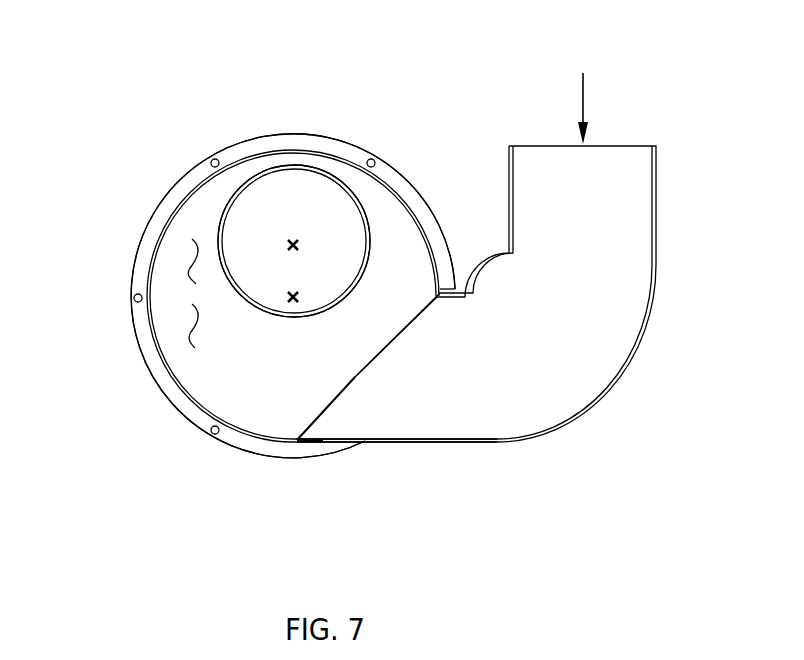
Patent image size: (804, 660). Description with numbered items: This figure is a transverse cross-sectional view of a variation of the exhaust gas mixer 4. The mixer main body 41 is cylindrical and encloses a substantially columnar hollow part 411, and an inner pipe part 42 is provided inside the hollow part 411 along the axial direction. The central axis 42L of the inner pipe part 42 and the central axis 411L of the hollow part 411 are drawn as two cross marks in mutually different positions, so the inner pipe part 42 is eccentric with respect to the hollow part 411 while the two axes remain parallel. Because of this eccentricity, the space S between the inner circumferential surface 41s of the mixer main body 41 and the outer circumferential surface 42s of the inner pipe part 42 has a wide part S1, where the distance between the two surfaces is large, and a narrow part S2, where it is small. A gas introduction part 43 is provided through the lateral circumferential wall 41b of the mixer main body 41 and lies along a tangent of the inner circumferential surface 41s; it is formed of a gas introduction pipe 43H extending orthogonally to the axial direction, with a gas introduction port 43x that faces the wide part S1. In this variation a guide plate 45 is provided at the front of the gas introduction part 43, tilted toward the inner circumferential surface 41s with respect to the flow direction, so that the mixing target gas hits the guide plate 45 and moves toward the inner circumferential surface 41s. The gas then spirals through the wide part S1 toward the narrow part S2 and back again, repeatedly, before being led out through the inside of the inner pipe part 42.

The exhaust gas mixer 4 is at (212, 95).
The mixer main body 41 is at (266, 153).
The inner circumferential surface 41s is at (224, 423).
The lateral circumferential wall 41b is at (183, 397).
The hollow part 411 is at (192, 325).
The inner pipe part 42 is at (218, 218).
The outer circumferential surface 42s is at (232, 288).
The central axis of the inner pipe part 42L is at (300, 245).
The central axis of the hollow part 411L is at (300, 298).
The gas introduction part 43 is at (404, 443).
The gas introduction port 43x is at (334, 387).
The gas introduction pipe 43H is at (573, 410).
The guide plate 45 is at (397, 335).
The space S is at (192, 258).
The wide part S1 is at (289, 414).
The narrow part S2 is at (311, 160).